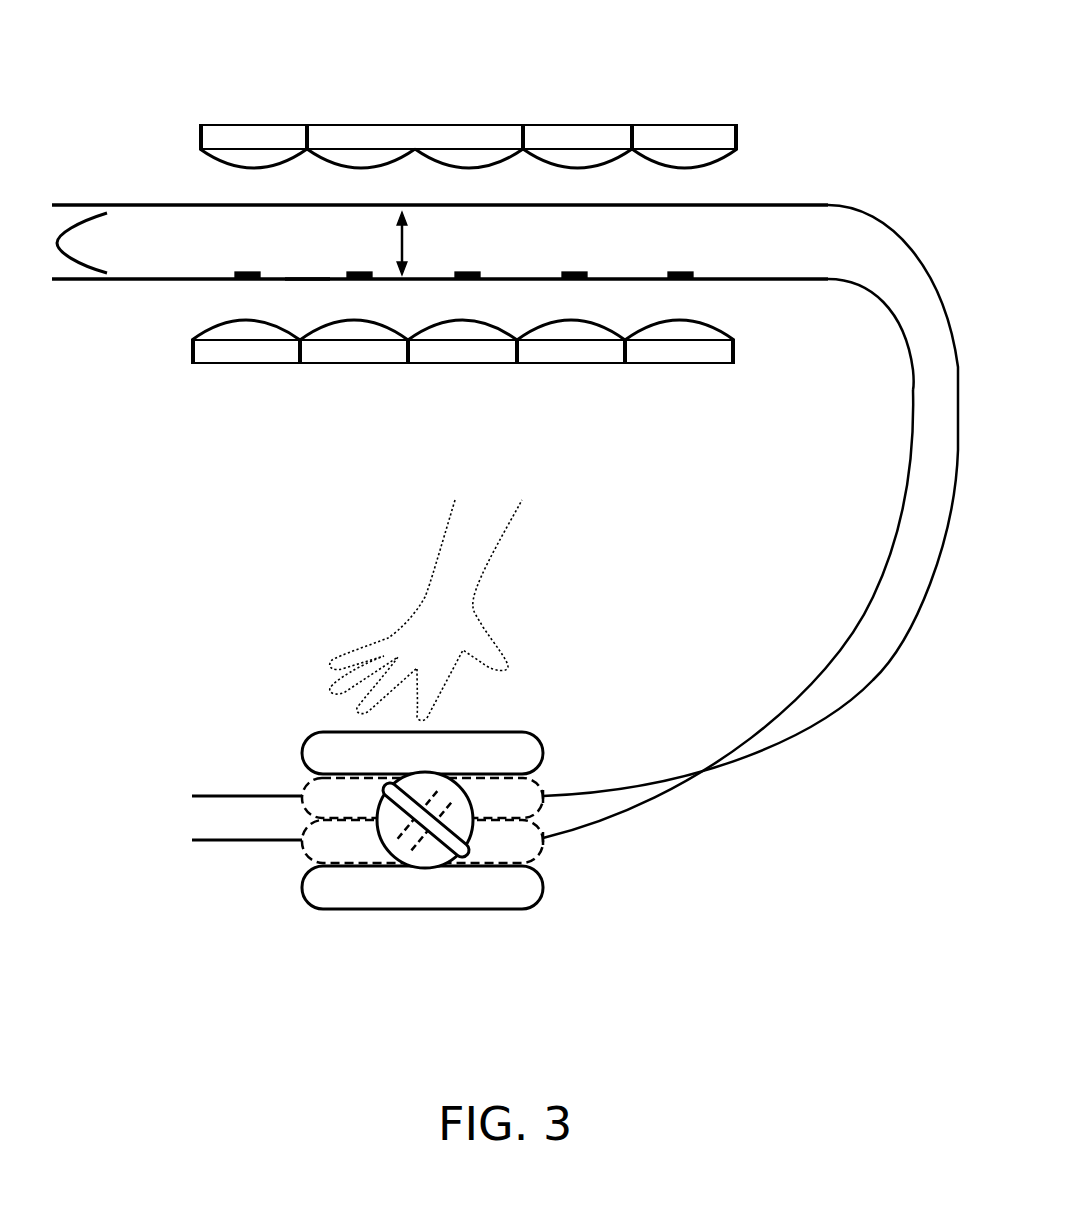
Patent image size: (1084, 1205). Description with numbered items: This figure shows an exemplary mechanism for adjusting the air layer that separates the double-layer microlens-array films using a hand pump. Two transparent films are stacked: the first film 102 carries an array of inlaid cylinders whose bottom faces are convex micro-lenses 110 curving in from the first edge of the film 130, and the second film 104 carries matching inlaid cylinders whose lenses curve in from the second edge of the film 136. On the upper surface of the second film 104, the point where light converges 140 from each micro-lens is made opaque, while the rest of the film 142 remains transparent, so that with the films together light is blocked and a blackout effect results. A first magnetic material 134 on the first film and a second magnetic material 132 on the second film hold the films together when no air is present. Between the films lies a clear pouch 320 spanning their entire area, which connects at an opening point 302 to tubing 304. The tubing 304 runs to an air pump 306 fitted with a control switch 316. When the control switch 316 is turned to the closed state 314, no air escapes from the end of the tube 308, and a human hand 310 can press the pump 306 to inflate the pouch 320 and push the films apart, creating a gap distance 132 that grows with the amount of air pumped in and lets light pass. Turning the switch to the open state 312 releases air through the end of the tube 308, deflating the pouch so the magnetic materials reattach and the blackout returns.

The first edge of the film 130 is at (125, 125).
The first film 102 is at (167, 140).
The convex micro-lenses 110 is at (463, 143).
The first magnetic material 134 is at (723, 215).
The second edge of the film 136 is at (163, 362).
The pouch 320 is at (58, 243).
The gap distance 132 is at (407, 238).
The point where light converges 140 is at (243, 281).
The rest of the film 142 is at (307, 275).
The second film 104 is at (780, 352).
The opening point 302 is at (837, 253).
The tubing 304 is at (767, 768).
The human hand 310 is at (510, 528).
The end of the tube 308 is at (190, 825).
The air pump 306 is at (505, 903).
The state 312 is at (450, 793).
The control switch 316 is at (428, 853).
The state 314 is at (457, 852).